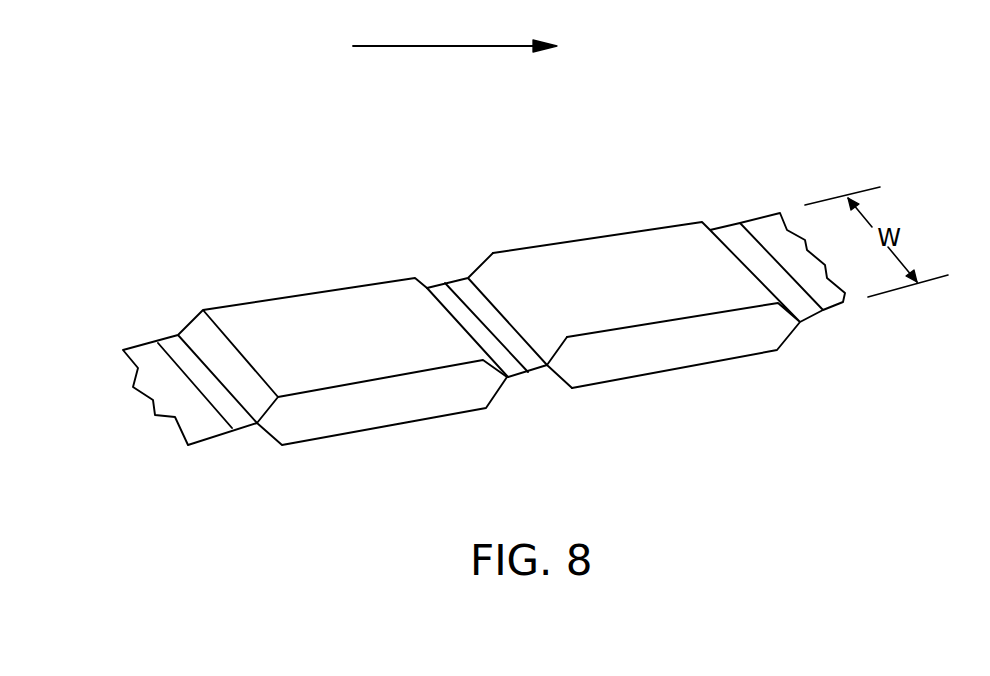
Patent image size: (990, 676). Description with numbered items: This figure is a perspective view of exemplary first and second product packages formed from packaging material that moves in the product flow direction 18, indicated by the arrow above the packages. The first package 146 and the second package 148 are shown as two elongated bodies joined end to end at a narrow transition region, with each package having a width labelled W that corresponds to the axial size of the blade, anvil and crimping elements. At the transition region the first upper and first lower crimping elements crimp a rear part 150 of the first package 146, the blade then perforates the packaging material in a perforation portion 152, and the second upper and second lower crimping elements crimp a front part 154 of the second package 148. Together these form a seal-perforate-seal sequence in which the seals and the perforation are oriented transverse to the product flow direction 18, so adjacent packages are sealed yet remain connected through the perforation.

The product flow direction 18 is at (440, 47).
The first package 146 is at (637, 258).
The second package 148 is at (243, 318).
The rear part 150 is at (457, 278).
The perforation portion 152 is at (530, 382).
The front part 154 is at (437, 282).